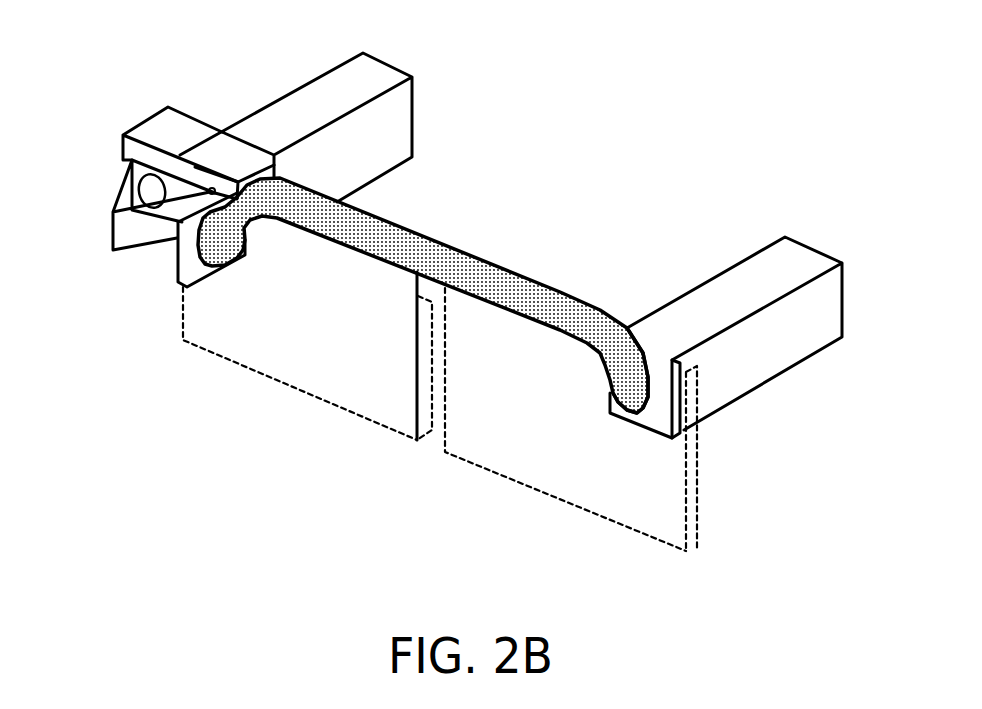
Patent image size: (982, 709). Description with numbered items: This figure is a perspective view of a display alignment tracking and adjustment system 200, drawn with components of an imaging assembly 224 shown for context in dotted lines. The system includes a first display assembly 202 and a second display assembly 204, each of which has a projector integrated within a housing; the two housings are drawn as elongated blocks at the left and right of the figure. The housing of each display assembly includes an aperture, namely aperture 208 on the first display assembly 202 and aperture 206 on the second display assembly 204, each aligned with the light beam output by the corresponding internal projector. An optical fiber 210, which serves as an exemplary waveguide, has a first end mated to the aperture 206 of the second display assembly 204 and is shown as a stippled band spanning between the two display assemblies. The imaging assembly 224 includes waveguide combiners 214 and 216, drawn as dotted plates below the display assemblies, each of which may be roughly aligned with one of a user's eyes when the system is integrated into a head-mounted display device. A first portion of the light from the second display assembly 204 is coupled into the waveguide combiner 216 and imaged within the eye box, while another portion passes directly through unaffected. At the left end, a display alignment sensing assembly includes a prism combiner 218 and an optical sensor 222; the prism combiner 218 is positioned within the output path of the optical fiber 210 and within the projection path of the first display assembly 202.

The display alignment tracking and adjustment system 200 is at (670, 122).
The first display assembly 202 is at (372, 166).
The second display assembly 204 is at (792, 354).
The aperture 206 is at (650, 356).
The aperture 208 is at (217, 173).
The optical fiber 210 is at (458, 252).
The waveguide combiner 214 is at (340, 334).
The waveguide combiner 216 is at (569, 437).
The prism combiner 218 is at (143, 238).
The optical sensor 222 is at (170, 128).
The imaging assembly 224 is at (455, 459).